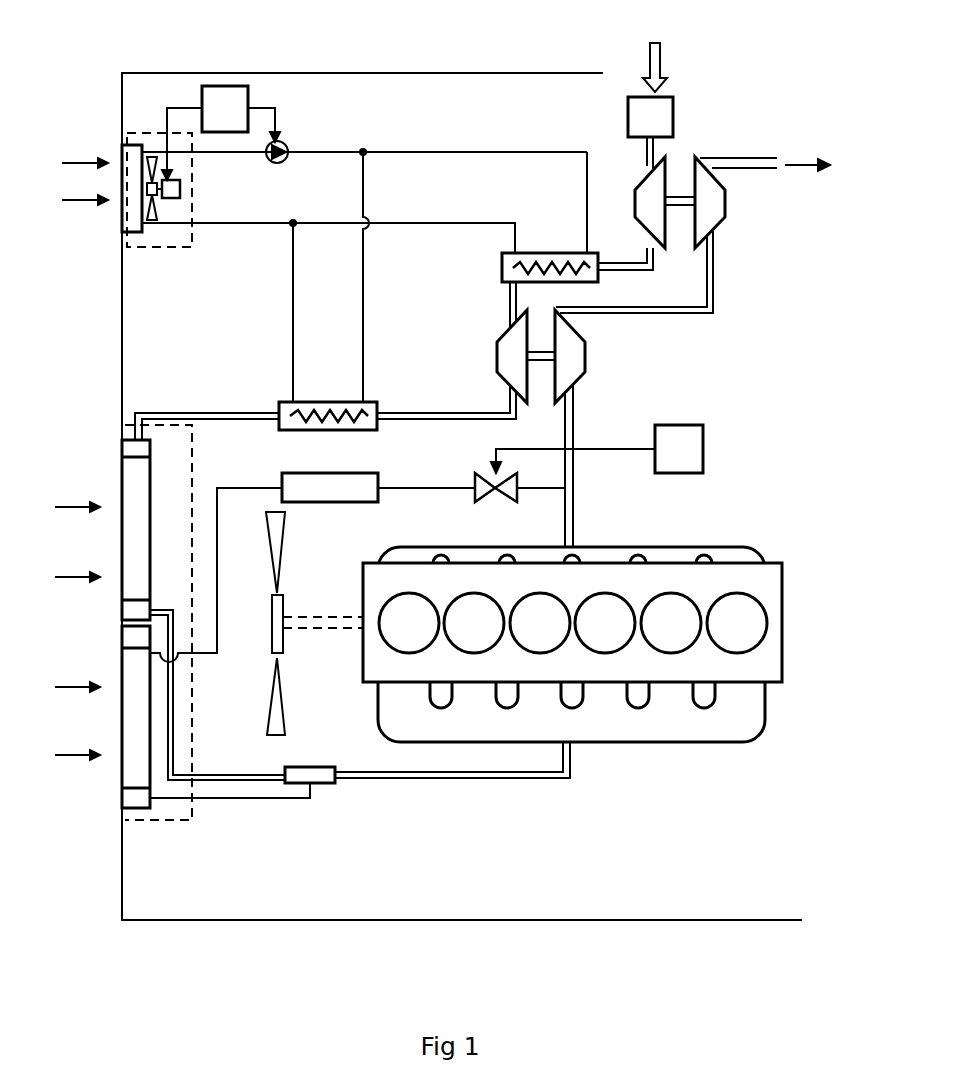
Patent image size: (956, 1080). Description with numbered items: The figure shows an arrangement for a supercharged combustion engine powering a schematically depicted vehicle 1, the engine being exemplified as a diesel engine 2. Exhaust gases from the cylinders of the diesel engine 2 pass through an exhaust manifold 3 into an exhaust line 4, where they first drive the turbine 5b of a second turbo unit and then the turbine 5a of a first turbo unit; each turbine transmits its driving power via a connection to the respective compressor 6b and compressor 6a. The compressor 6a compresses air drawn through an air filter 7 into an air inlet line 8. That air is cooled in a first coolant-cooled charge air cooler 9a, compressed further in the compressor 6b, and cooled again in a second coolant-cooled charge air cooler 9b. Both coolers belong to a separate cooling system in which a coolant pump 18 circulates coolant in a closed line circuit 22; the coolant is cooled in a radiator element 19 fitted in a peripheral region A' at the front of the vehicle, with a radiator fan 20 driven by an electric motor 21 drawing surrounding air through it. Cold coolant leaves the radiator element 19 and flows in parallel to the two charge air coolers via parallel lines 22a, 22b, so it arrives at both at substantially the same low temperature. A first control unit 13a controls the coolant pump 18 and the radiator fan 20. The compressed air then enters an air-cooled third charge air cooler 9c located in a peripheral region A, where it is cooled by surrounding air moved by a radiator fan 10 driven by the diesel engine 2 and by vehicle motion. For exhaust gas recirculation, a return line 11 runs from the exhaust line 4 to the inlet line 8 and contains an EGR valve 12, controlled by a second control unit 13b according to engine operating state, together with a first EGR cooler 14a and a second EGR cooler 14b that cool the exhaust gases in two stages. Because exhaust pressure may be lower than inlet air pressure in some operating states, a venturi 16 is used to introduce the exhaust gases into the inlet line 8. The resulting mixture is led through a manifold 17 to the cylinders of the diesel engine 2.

The vehicle 1 is at (142, 97).
The diesel engine 2 is at (765, 662).
The exhaust manifold 3 is at (597, 558).
The exhaust line 4 is at (572, 507).
The turbine of the first turbo unit 5a is at (713, 203).
The turbine of the second turbo unit 5b is at (572, 348).
The compressor of the first turbo unit 6a is at (648, 203).
The compressor of the second turbo unit 6b is at (512, 362).
The air filter 7 is at (665, 115).
The air inlet line 8 is at (250, 414).
The first charge air cooler 9a is at (540, 260).
The second charge air cooler 9b is at (318, 405).
The third charge air cooler 9c is at (137, 518).
The radiator fan 10 is at (277, 635).
The return line 11 is at (228, 487).
The EGR valve 12 is at (485, 488).
The first control unit 13a is at (228, 95).
The second control unit 13b is at (688, 445).
The first EGR cooler 14a is at (352, 483).
The second EGR cooler 14b is at (137, 747).
The venturi 16 is at (310, 777).
The manifold 17 is at (580, 732).
The coolant pump 18 is at (285, 152).
The radiator element 19 is at (132, 200).
The radiator fan 20 is at (155, 167).
The electric motor 21 is at (175, 187).
The closed line circuit 22 is at (340, 148).
The first parallel line 22a is at (465, 148).
The second parallel line 22b is at (367, 327).
The peripheral region A is at (184, 643).
The peripheral region A' is at (188, 210).